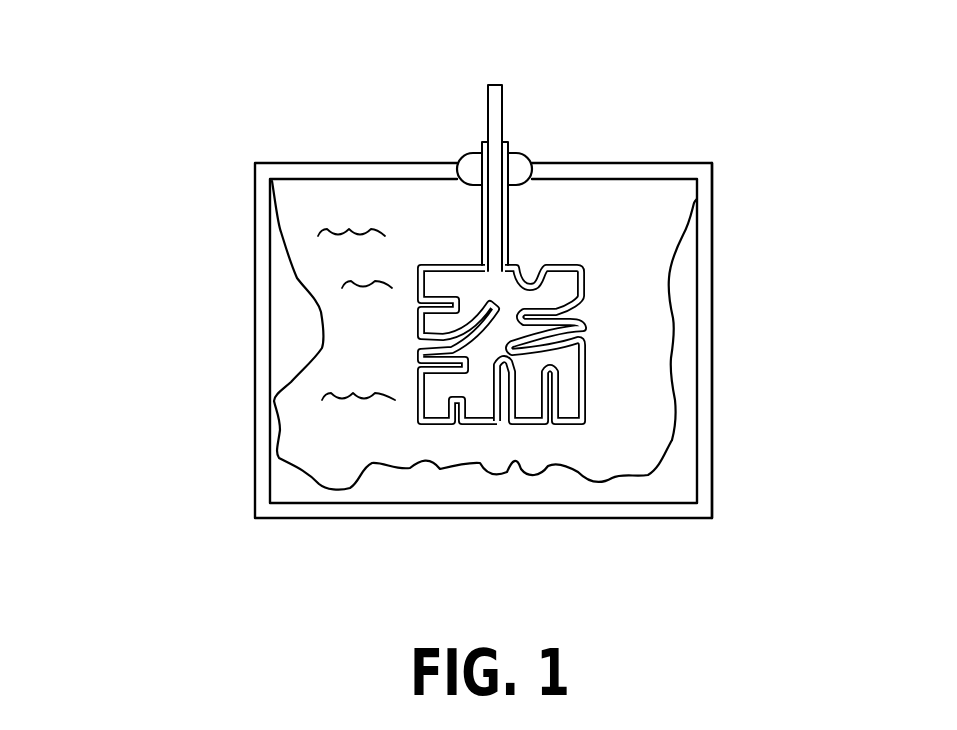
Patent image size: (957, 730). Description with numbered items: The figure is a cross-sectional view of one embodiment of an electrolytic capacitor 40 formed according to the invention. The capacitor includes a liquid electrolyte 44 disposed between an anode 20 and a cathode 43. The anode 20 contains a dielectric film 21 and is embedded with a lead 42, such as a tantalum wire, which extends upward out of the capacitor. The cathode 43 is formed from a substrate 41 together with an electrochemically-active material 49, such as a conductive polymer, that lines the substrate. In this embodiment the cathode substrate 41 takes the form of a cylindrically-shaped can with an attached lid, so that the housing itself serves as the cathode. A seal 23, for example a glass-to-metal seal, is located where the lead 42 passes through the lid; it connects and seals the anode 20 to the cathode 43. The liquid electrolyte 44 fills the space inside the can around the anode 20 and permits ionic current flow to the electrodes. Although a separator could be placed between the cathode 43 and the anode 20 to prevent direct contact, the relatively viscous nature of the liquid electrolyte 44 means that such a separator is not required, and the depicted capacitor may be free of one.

The electrolytic capacitor 40 is at (150, 256).
The substrate 41 is at (712, 509).
The cathode 43 is at (737, 289).
The liquid electrolyte 44 is at (322, 395).
The electrochemically-active material 49 is at (681, 253).
The anode 20 is at (448, 288).
The dielectric film 21 is at (562, 270).
The lead 42 is at (493, 95).
The seal 23 is at (523, 168).